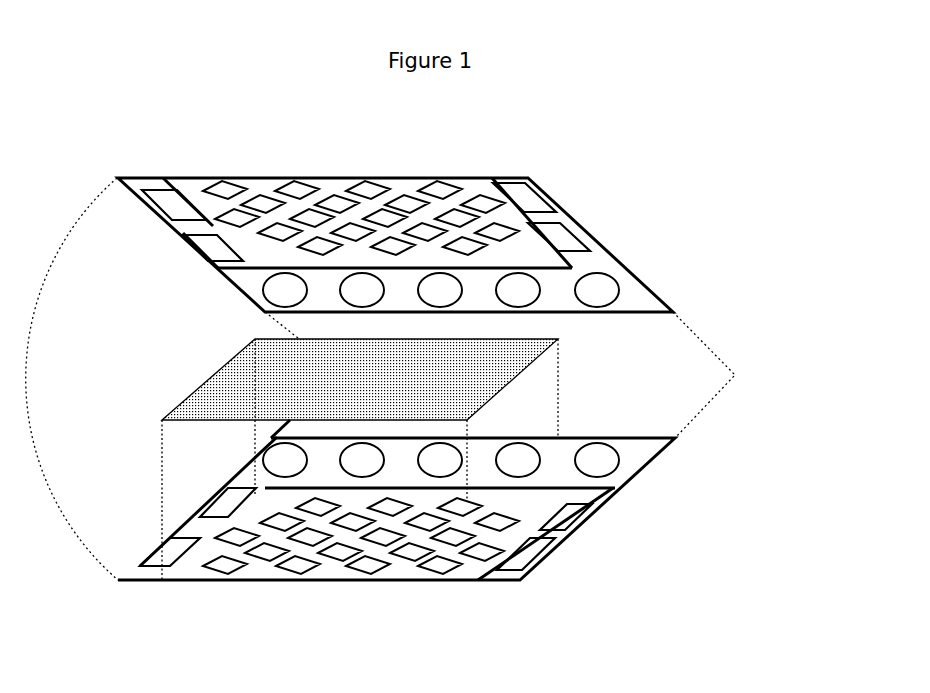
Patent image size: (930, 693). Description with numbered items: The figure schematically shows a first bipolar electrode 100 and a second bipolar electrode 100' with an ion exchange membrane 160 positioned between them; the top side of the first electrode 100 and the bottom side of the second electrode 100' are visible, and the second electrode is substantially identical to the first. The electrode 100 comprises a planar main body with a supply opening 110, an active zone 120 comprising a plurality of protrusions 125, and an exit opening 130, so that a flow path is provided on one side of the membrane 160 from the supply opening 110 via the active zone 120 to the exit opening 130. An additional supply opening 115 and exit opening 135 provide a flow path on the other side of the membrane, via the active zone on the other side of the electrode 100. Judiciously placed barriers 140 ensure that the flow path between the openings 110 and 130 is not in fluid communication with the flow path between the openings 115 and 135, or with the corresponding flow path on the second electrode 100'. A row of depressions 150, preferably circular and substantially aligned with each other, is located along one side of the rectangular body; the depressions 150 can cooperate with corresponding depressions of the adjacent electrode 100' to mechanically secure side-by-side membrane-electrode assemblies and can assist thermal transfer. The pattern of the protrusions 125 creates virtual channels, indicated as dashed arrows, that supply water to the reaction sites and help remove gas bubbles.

The second bipolar electrode 100' is at (437, 245).
The first bipolar electrode 100 is at (455, 538).
The supply opening 110 is at (187, 499).
The additional supply opening 115 is at (210, 494).
The active zone 120 is at (358, 577).
The protrusion 125 is at (371, 567).
The exit opening 130 is at (572, 515).
The exit opening 135 is at (562, 560).
The barrier 140 is at (605, 546).
The depression 150 is at (600, 460).
The ion exchange membrane 160 is at (253, 368).